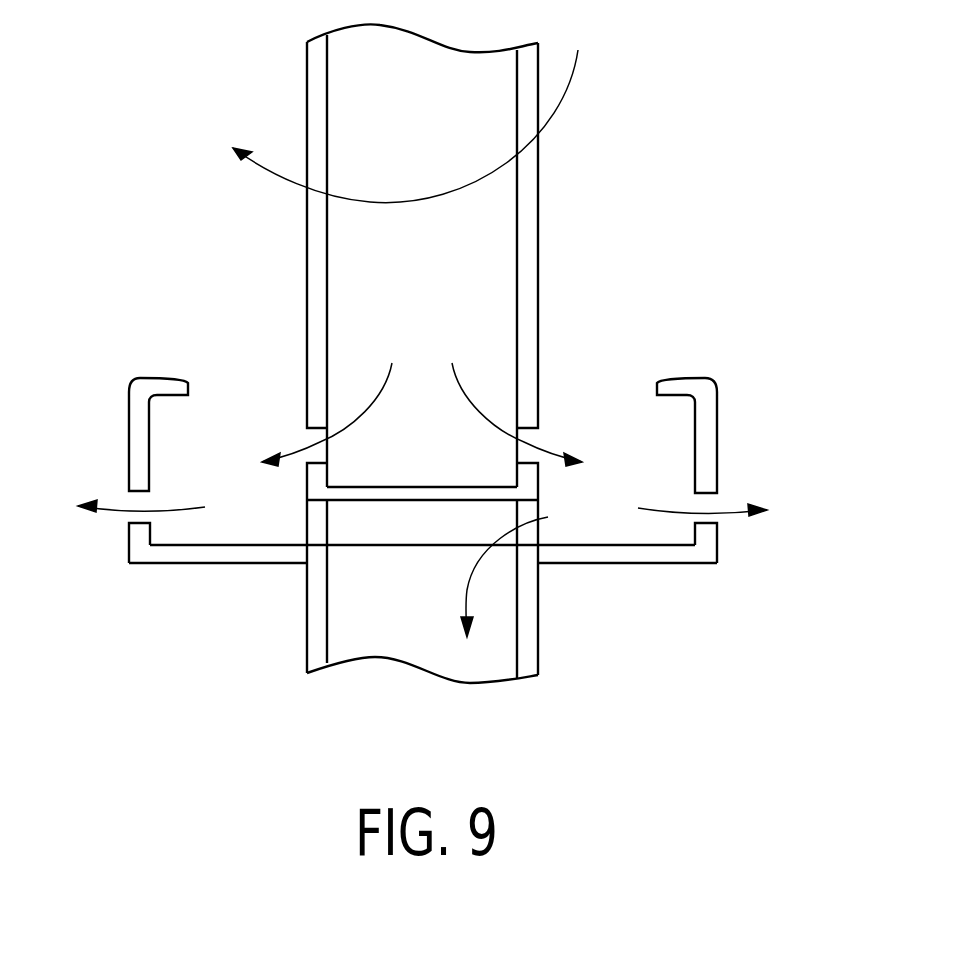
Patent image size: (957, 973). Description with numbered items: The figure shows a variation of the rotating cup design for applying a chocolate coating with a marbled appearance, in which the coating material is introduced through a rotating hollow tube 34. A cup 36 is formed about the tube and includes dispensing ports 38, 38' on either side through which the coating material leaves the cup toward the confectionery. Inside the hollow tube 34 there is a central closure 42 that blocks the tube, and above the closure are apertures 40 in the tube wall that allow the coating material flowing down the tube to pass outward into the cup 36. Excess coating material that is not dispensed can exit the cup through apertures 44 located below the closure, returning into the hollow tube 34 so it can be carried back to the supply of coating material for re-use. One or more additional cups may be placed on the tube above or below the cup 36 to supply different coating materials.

The rotating hollow tube 34 is at (538, 198).
The cup 36 is at (688, 377).
The dispensing ports 38 is at (724, 478).
The dispensing port 38' is at (117, 445).
The apertures 40 is at (318, 432).
The central closure 42 is at (430, 483).
The apertures 44 is at (312, 526).